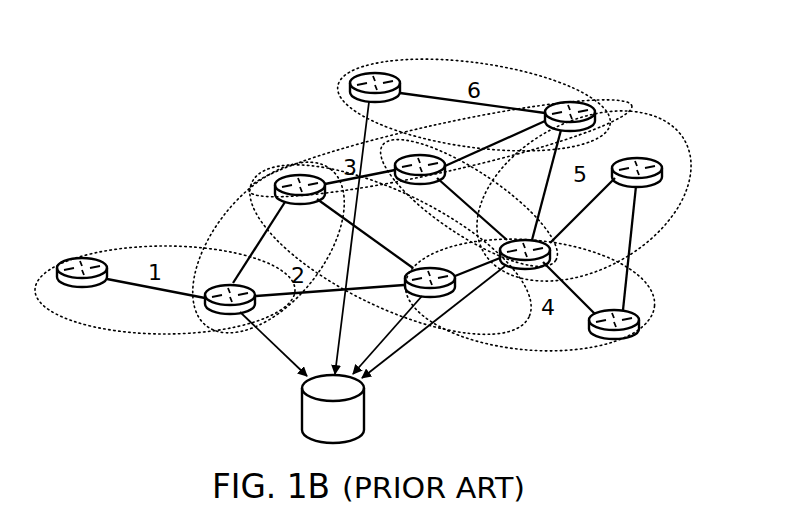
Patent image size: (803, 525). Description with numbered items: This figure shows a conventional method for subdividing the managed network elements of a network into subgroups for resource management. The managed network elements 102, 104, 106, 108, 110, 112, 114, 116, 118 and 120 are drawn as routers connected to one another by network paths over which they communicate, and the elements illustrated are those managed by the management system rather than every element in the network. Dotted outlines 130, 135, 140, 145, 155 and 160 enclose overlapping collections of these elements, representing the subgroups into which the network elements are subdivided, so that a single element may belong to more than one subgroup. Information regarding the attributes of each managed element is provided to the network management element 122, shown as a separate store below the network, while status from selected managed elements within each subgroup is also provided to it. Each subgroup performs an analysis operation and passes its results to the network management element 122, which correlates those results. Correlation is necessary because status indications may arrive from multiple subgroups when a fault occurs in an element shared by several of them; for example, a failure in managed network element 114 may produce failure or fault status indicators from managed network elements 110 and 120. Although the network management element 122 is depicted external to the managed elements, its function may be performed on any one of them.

The managed network element 102 is at (95, 260).
The managed network element 104 is at (240, 283).
The managed network element 106 is at (289, 175).
The managed network element 108 is at (453, 303).
The managed network element 110 is at (520, 240).
The managed network element 112 is at (420, 157).
The managed network element 114 is at (580, 102).
The managed network element 116 is at (637, 158).
The managed network element 118 is at (642, 330).
The managed network element 120 is at (390, 73).
The network management element 122 is at (367, 405).
The router group 130 is at (157, 247).
The router group 135 is at (240, 200).
The router group 140 is at (332, 150).
The router group 145 is at (600, 352).
The router group 155 is at (640, 108).
The router group 160 is at (508, 65).